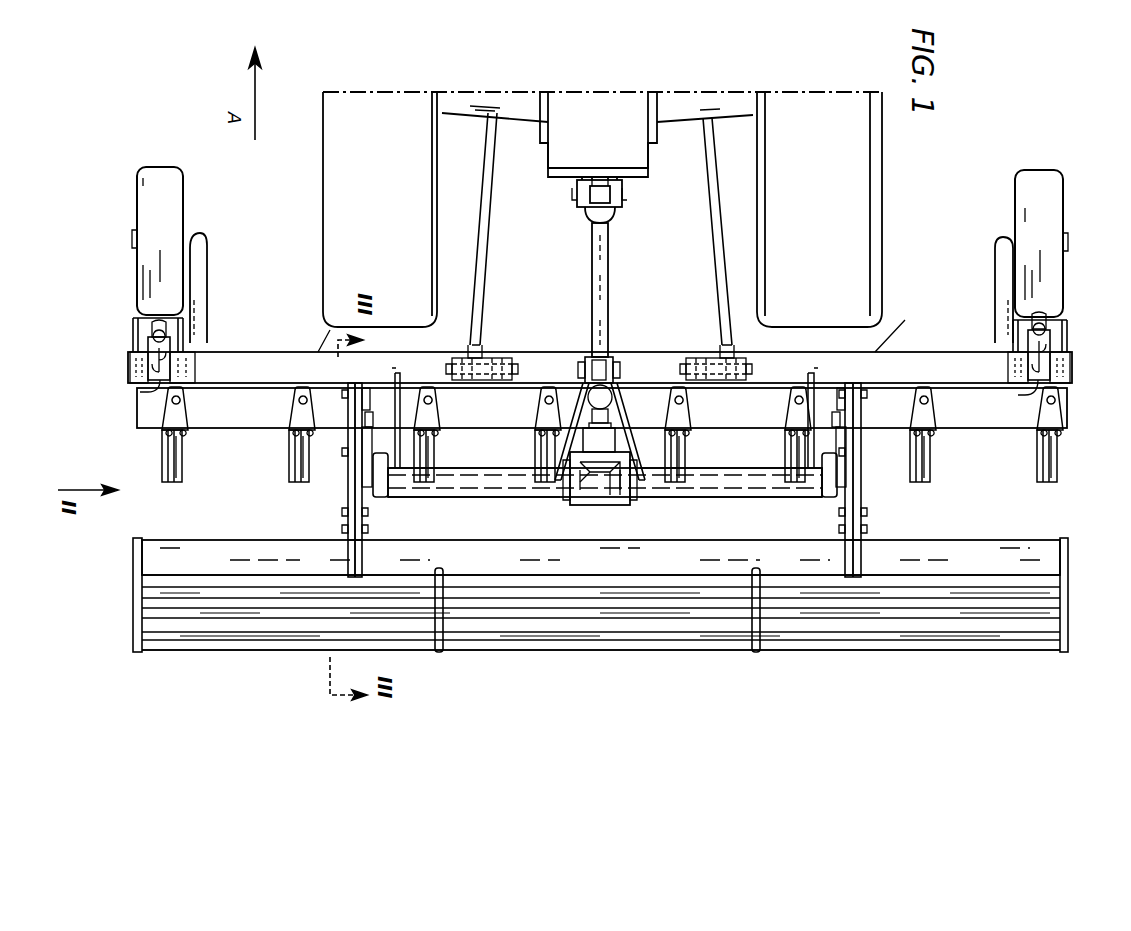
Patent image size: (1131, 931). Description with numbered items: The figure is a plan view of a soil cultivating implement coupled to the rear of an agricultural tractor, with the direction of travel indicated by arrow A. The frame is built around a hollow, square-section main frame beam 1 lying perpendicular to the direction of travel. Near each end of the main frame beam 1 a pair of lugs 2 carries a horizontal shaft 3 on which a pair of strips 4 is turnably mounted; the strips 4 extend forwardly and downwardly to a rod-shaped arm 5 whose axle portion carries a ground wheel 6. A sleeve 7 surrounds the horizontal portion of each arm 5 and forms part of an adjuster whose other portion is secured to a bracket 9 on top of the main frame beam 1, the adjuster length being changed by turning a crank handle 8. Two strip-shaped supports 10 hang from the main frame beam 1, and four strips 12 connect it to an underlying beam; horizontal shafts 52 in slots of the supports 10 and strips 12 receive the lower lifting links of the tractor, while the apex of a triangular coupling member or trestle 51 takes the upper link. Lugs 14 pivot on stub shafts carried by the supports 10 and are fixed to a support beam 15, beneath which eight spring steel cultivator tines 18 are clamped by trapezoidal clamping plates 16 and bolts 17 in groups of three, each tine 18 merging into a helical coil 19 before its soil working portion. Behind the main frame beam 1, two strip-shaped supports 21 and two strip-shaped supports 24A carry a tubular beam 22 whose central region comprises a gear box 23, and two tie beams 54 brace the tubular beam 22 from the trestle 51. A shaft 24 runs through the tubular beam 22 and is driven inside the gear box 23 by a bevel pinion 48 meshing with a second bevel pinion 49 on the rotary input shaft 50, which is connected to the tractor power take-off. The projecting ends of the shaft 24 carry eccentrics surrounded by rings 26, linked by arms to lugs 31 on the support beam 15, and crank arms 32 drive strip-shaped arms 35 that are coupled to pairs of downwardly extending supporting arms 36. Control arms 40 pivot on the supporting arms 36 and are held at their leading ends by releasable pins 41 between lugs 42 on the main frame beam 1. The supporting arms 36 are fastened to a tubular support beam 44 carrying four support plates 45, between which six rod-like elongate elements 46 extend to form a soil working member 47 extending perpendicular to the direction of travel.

The main frame beam 1 is at (938, 365).
The lugs 2 is at (126, 352).
The shaft 3 is at (128, 378).
The strips 4 is at (134, 330).
The rod-shaped arm 5 is at (207, 258).
The ground wheel 6 is at (194, 200).
The sleeve 7 is at (160, 322).
The crank handle 8 is at (135, 392).
The bracket 9 is at (165, 376).
The strip-shaped supports 10 is at (470, 336).
The strips 12 is at (492, 355).
The lugs 14 is at (472, 405).
The support beam 15 is at (975, 428).
The clamping plates 16 is at (188, 432).
The bolts 17 is at (190, 410).
The cultivator tines 18 is at (183, 465).
The helical coil 19 is at (1062, 478).
The strip-shaped supports 21 is at (392, 372).
The tubular beam 22 is at (730, 492).
The gear box 23 is at (632, 498).
The shaft 24 is at (495, 495).
The strip-shaped supports 24A is at (535, 462).
The ring 26 is at (385, 497).
The lugs 31 is at (348, 405).
The crank arms 32 is at (365, 487).
The strip-shaped arms 35 is at (346, 500).
The supporting arms 36 is at (346, 548).
The control arms 40 is at (348, 510).
The releasable pin 41 is at (370, 420).
The lugs 42 is at (320, 350).
The tubular support beam 44 is at (235, 540).
The support plates 45 is at (133, 560).
The elongate elements 46 is at (200, 630).
The soil working member 47 is at (950, 660).
The bevel pinion 48 is at (612, 500).
The second bevel pinion 49 is at (578, 500).
The rotary input shaft 50 is at (565, 412).
The coupling member or trestle 51 is at (620, 360).
The horizontal shafts 52 is at (510, 358).
The tie beams 54 is at (592, 335).